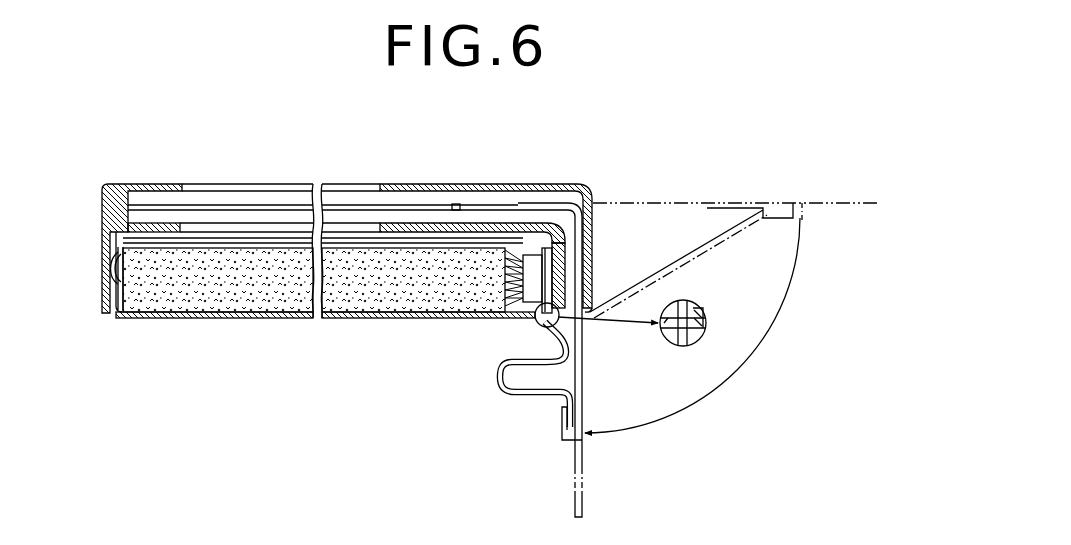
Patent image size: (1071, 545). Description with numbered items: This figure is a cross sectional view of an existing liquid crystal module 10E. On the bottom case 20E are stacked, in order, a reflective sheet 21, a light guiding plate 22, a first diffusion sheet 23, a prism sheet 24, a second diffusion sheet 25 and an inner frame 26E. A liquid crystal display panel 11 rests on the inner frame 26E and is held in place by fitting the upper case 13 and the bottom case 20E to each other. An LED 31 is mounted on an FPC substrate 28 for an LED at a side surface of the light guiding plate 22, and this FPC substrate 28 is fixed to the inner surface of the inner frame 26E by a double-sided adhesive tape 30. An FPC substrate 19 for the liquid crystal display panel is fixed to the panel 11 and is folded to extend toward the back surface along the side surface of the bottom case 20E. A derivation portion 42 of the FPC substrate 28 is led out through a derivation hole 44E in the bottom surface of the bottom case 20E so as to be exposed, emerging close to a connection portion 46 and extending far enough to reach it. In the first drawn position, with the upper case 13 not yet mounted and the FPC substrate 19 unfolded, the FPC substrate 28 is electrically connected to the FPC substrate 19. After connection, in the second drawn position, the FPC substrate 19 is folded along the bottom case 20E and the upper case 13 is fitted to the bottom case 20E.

The liquid crystal module 10E is at (92, 139).
The liquid crystal display panel 11 is at (150, 195).
The upper case 13 is at (565, 184).
The FPC substrate for a liquid crystal display panel 19 is at (581, 393).
The bottom case 20E is at (340, 318).
The reflective sheet 21 is at (397, 313).
The light guiding plate 22 is at (435, 285).
The first diffusion sheet 23 is at (435, 243).
The prism sheet 24 is at (400, 222).
The second diffusion sheet 25 is at (354, 235).
The inner frame 26E is at (493, 223).
The FPC substrate for an LED 28 is at (543, 267).
The double-sided adhesive tape 30 is at (563, 248).
The LED 31 is at (533, 265).
The derivation portion 42 is at (568, 352).
The derivation hole 44E is at (672, 346).
The connection portion 46 is at (562, 433).